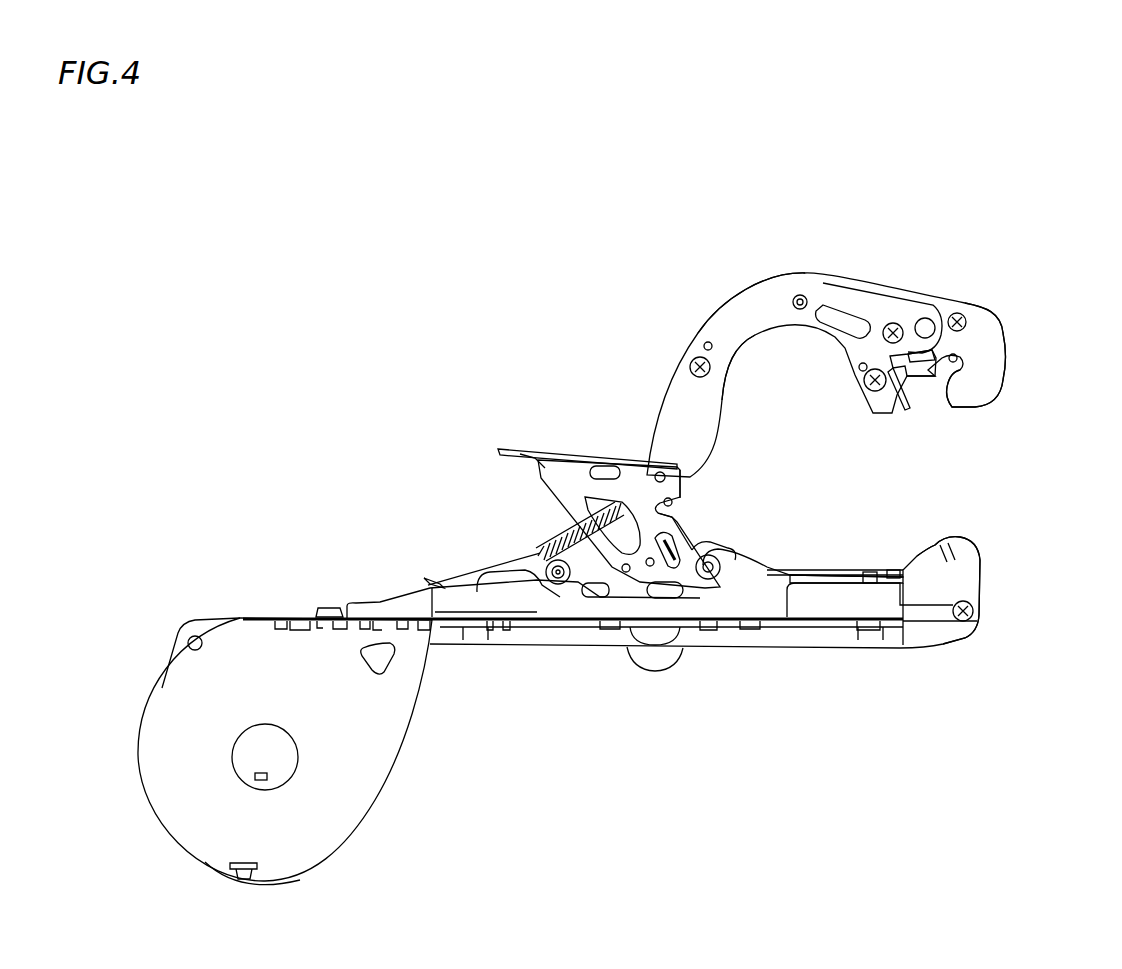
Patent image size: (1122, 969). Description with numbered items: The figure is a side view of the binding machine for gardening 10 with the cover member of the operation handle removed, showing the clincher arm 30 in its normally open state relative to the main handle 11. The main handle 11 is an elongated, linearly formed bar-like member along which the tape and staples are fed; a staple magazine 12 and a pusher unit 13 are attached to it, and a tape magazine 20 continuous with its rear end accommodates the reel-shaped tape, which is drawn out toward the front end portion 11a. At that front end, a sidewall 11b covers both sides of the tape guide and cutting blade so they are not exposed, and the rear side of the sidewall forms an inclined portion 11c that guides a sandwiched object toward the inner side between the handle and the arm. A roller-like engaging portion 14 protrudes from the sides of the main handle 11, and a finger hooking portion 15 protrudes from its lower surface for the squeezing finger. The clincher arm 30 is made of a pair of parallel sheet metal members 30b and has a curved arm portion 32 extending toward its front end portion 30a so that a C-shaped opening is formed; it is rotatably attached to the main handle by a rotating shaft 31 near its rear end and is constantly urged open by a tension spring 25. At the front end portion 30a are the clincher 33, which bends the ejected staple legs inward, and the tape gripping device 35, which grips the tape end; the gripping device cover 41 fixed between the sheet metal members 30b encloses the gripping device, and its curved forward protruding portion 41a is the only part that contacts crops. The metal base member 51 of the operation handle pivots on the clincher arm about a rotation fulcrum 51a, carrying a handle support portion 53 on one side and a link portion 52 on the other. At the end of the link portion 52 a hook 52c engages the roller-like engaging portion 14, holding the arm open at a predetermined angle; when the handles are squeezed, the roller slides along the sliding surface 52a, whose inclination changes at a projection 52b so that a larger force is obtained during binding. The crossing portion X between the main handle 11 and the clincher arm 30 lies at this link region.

The binding machine for gardening 10 is at (323, 333).
The main handle 11 is at (520, 668).
The front end portion of the main handle 11a is at (988, 540).
The sidewall 11b is at (985, 585).
The inclined portion 11c is at (927, 555).
The staple magazine 12 is at (846, 576).
The pusher unit 13 is at (426, 580).
The roller-like engaging portion 14 is at (717, 588).
The finger hooking portion 15 is at (655, 672).
The tape magazine 20 is at (368, 828).
The tension spring 25 is at (560, 545).
The clincher arm 30 is at (880, 275).
The front end portion of the clincher arm 30a is at (975, 411).
The sheet metal member 30b is at (752, 283).
The rotating shaft 31 is at (545, 568).
The arm portion 32 is at (758, 347).
The clincher 33 is at (870, 402).
The tape gripping device 35 is at (919, 394).
The gripping device cover 41 is at (975, 305).
The forward protruding portion 41a is at (1006, 350).
The base member 51 is at (560, 440).
The rotation fulcrum 51a is at (658, 470).
The link portion 52 is at (622, 600).
The sliding surface 52a is at (673, 519).
The projection 52b is at (672, 517).
The hook 52c is at (706, 543).
The handle support portion 53 is at (540, 452).
The crossing portion X is at (672, 517).